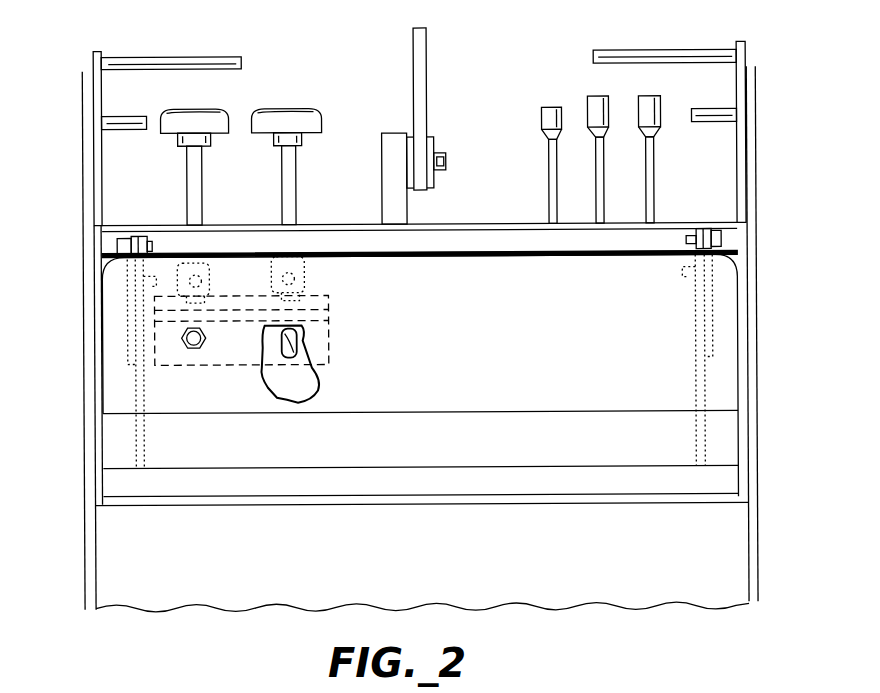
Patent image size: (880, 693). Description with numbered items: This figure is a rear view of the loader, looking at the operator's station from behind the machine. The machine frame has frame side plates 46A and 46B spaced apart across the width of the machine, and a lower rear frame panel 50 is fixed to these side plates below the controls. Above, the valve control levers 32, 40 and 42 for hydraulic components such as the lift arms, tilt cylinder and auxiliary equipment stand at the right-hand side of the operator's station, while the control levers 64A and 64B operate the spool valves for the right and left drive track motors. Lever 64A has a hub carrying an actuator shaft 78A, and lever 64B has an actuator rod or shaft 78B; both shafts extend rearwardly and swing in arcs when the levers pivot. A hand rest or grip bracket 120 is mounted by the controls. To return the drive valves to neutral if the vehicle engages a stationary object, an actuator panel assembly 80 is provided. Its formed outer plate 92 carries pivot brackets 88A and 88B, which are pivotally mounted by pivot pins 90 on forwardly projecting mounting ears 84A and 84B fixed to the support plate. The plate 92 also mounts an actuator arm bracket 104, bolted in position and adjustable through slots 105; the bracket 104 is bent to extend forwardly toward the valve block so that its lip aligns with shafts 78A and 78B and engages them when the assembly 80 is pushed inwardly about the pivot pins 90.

The hand rest or grip bracket 120 is at (217, 58).
The control lever 64B is at (195, 180).
The control lever 64A is at (288, 182).
The valve control lever 42 is at (550, 117).
The valve control lever 40 is at (600, 103).
The valve control lever 32 is at (650, 103).
The pivot pins 90 is at (118, 243).
The actuator rod or shaft 78B is at (197, 278).
The actuator shaft 78A is at (296, 280).
The mounting ear 84B is at (127, 318).
The mounting ear 84A is at (715, 300).
The pivot bracket 88B is at (147, 393).
The pivot bracket 88A is at (693, 350).
The actuator arm bracket 104 is at (300, 357).
The slots 105 is at (194, 350).
The frame side plate 46B is at (83, 413).
The frame side plate 46A is at (757, 410).
The formed outer plate 92 is at (277, 453).
The actuator panel assembly 80 is at (489, 387).
The lower rear frame panel 50 is at (517, 597).